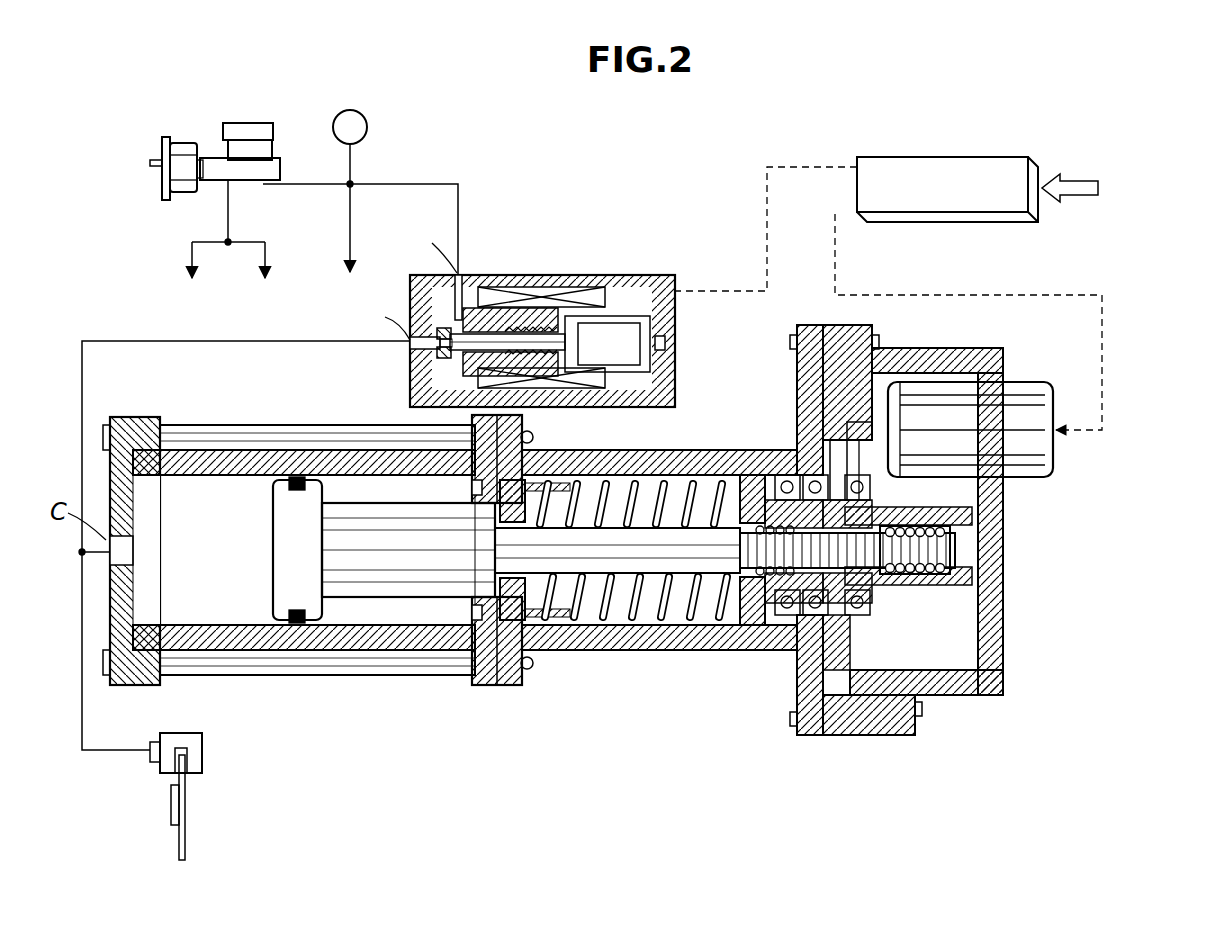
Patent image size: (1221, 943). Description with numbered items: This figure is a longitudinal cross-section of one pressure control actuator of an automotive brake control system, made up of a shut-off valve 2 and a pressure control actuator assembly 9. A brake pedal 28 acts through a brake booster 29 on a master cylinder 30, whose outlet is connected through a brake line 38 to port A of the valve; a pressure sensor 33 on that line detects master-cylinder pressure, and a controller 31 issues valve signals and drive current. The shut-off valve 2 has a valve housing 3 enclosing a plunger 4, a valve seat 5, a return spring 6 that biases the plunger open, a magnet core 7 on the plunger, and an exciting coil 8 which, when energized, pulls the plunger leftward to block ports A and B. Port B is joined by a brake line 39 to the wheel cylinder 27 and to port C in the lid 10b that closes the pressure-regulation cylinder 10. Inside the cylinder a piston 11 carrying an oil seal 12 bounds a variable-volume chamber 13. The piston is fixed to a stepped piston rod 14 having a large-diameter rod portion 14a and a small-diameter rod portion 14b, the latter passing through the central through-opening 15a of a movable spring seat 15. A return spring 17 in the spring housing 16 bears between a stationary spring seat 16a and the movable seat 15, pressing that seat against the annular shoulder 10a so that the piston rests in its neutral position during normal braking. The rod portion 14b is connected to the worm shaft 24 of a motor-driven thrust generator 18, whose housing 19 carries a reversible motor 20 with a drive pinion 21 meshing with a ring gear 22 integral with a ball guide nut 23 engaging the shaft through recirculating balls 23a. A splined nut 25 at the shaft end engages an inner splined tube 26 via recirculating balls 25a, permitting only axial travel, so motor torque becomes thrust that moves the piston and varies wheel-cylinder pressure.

The shut-off valve 2 is at (537, 262).
The valve housing 3 is at (566, 283).
The plunger 4 is at (482, 342).
The valve seat 5 is at (437, 342).
The return spring 6 is at (522, 338).
The magnet core 7 is at (638, 328).
The exciting coil 8 is at (592, 295).
The pressure control actuator assembly 9 is at (416, 591).
The pressure-regulation cylinder 10 is at (212, 450).
The annular shoulder 10a is at (470, 482).
The lid 10b is at (118, 597).
The piston 11 is at (270, 583).
The oil seal 12 is at (297, 477).
The variable-volume chamber 13 is at (304, 550).
The stepped piston rod 14 is at (420, 600).
The large-diameter rod portion 14a is at (370, 594).
The small-diameter rod portion 14b is at (645, 576).
The movable spring seat 15 is at (549, 619).
The central through-opening 15a is at (515, 506).
The spring housing 16 is at (656, 650).
The stationary spring seat 16a is at (752, 624).
The return spring 17 is at (688, 500).
The motor-driven thrust generator 18 is at (940, 724).
The housing 19 is at (836, 735).
The reversible motor 20 is at (1040, 478).
The drive pinion 21 is at (853, 423).
The ring gear 22 is at (853, 447).
The ball guide nut 23 is at (770, 488).
The recirculating balls 23a is at (768, 604).
The worm shaft 24 is at (730, 578).
The splined nut 25 is at (958, 548).
The recirculating balls 25a is at (940, 592).
The inner splined tube 26 is at (922, 572).
The wheel cylinder 27 is at (150, 762).
The brake pedal 28 is at (148, 172).
The brake booster 29 is at (178, 197).
The master cylinder 30 is at (247, 176).
The controller 31 is at (862, 157).
The pressure sensor 33 is at (368, 128).
The brake line 38 is at (434, 183).
The brake line 39 is at (82, 670).